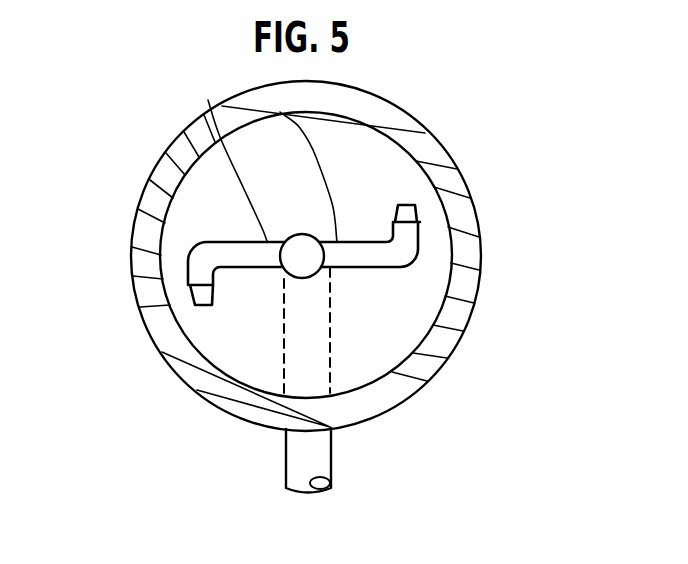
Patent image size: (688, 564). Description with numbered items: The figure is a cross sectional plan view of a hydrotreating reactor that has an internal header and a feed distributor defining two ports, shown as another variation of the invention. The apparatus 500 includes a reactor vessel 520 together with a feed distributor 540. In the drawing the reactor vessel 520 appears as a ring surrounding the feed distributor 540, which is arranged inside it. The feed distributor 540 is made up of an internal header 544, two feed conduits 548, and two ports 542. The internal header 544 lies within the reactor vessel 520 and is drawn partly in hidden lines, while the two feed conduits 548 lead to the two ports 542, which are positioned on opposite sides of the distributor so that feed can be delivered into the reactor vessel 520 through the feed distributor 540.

The apparatus 500 is at (463, 142).
The reactor vessel 520 is at (143, 199).
The feed distributor 540 is at (335, 459).
The ports 542 is at (405, 206).
The internal header 544 is at (330, 370).
The feed conduits 548 is at (425, 133).